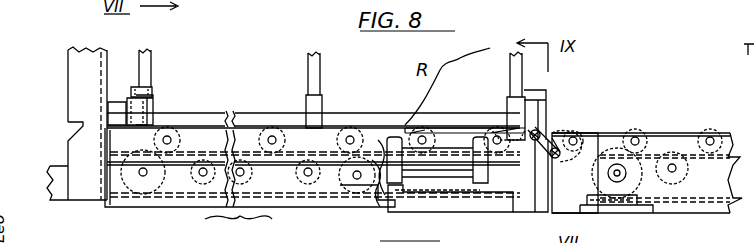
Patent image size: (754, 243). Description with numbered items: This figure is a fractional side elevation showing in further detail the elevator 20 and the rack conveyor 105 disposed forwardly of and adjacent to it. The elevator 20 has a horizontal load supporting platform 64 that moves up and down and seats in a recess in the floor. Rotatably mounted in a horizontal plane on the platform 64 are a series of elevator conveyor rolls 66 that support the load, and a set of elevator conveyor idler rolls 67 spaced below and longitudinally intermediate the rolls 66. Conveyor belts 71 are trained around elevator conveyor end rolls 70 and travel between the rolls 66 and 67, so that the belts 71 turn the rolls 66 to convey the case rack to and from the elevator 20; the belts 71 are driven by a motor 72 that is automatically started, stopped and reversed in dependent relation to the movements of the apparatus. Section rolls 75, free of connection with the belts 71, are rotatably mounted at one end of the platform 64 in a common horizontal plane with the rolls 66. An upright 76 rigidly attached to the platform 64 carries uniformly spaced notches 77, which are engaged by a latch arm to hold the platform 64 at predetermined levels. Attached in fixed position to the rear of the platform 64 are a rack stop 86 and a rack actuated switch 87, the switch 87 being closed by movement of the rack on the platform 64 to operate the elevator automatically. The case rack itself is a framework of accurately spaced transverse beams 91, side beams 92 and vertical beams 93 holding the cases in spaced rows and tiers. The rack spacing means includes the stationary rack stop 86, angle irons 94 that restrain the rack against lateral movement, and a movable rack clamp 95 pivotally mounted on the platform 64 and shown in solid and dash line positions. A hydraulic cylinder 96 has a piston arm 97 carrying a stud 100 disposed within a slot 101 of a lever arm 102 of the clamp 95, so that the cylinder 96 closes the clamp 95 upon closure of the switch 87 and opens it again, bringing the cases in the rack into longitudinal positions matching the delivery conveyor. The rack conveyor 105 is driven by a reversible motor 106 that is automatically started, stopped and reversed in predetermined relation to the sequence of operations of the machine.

The elevator 20 is at (238, 229).
The load supporting platform 64 is at (116, 207).
The elevator conveyor rolls 66 is at (176, 127).
The elevator conveyor idler rolls 67 is at (194, 176).
The elevator conveyor end rolls 70 is at (155, 192).
The conveyor belts 71 is at (200, 196).
The motor 72 is at (334, 200).
The section rolls 75 is at (488, 128).
The upright 76 is at (67, 74).
The notches 77 is at (67, 125).
The rack stop 86 is at (136, 88).
The rack actuated switch 87 is at (116, 105).
The transverse beams 91 is at (153, 100).
The side beams 92 is at (233, 112).
The vertical beams 93 is at (146, 68).
The angle irons 94 is at (142, 108).
The rack clamp 95 is at (548, 98).
The hydraulic cylinder 96 is at (450, 174).
The piston arm 97 is at (536, 172).
The stud 100 is at (556, 165).
The slot 101 is at (552, 170).
The lever arm 102 is at (560, 130).
The rack conveyor 105 is at (735, 116).
The reversible motor 106 is at (633, 212).